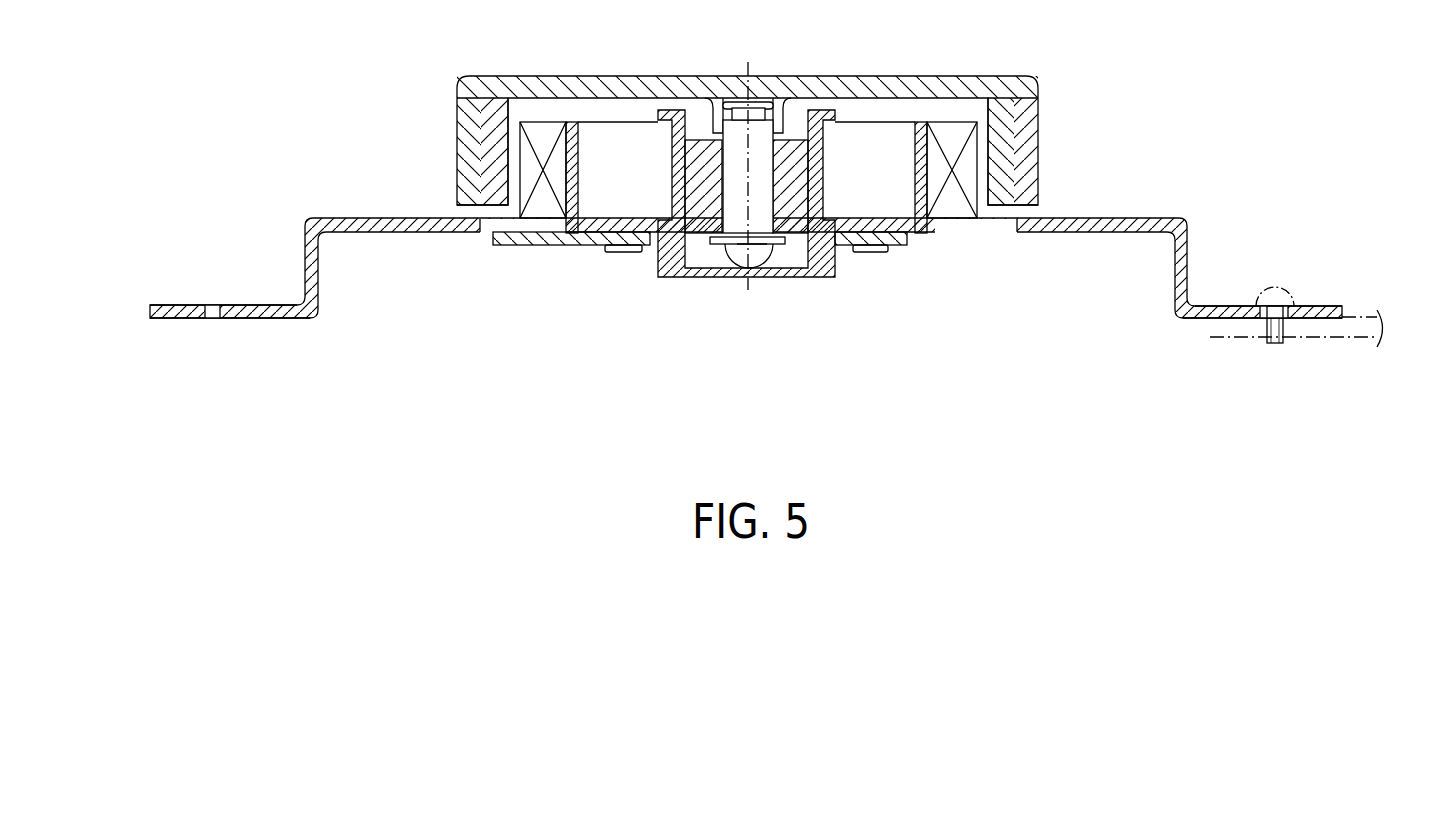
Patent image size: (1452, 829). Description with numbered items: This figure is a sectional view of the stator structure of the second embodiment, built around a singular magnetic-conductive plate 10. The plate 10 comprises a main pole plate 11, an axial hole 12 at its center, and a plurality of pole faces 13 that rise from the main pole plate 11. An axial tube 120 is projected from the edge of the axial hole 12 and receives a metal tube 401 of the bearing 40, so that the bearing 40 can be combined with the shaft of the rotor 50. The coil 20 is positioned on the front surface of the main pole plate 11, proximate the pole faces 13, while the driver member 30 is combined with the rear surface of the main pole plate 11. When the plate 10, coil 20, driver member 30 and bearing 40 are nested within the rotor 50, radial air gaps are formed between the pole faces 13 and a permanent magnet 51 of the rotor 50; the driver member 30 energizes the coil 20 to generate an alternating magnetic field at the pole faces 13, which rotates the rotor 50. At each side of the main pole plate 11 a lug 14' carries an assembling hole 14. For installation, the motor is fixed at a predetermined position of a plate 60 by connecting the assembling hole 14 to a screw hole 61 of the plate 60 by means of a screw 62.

The singular magnetic-conductive plate 10 is at (360, 190).
The main pole plate 11 is at (412, 233).
The axial hole 12 is at (777, 263).
The axial tube 120 is at (837, 262).
The pole faces 13 is at (540, 120).
The assembling hole 14 is at (729, 308).
The lug 14' is at (746, 342).
The coil 20 is at (540, 203).
The driver member 30 is at (583, 246).
The bearing 40 is at (707, 155).
The metal tube 401 is at (815, 135).
The rotor 50 is at (928, 90).
The permanent magnet 51 is at (493, 122).
The plate 60 is at (1355, 327).
The screw hole 61 is at (1262, 330).
The screw 62 is at (1290, 298).